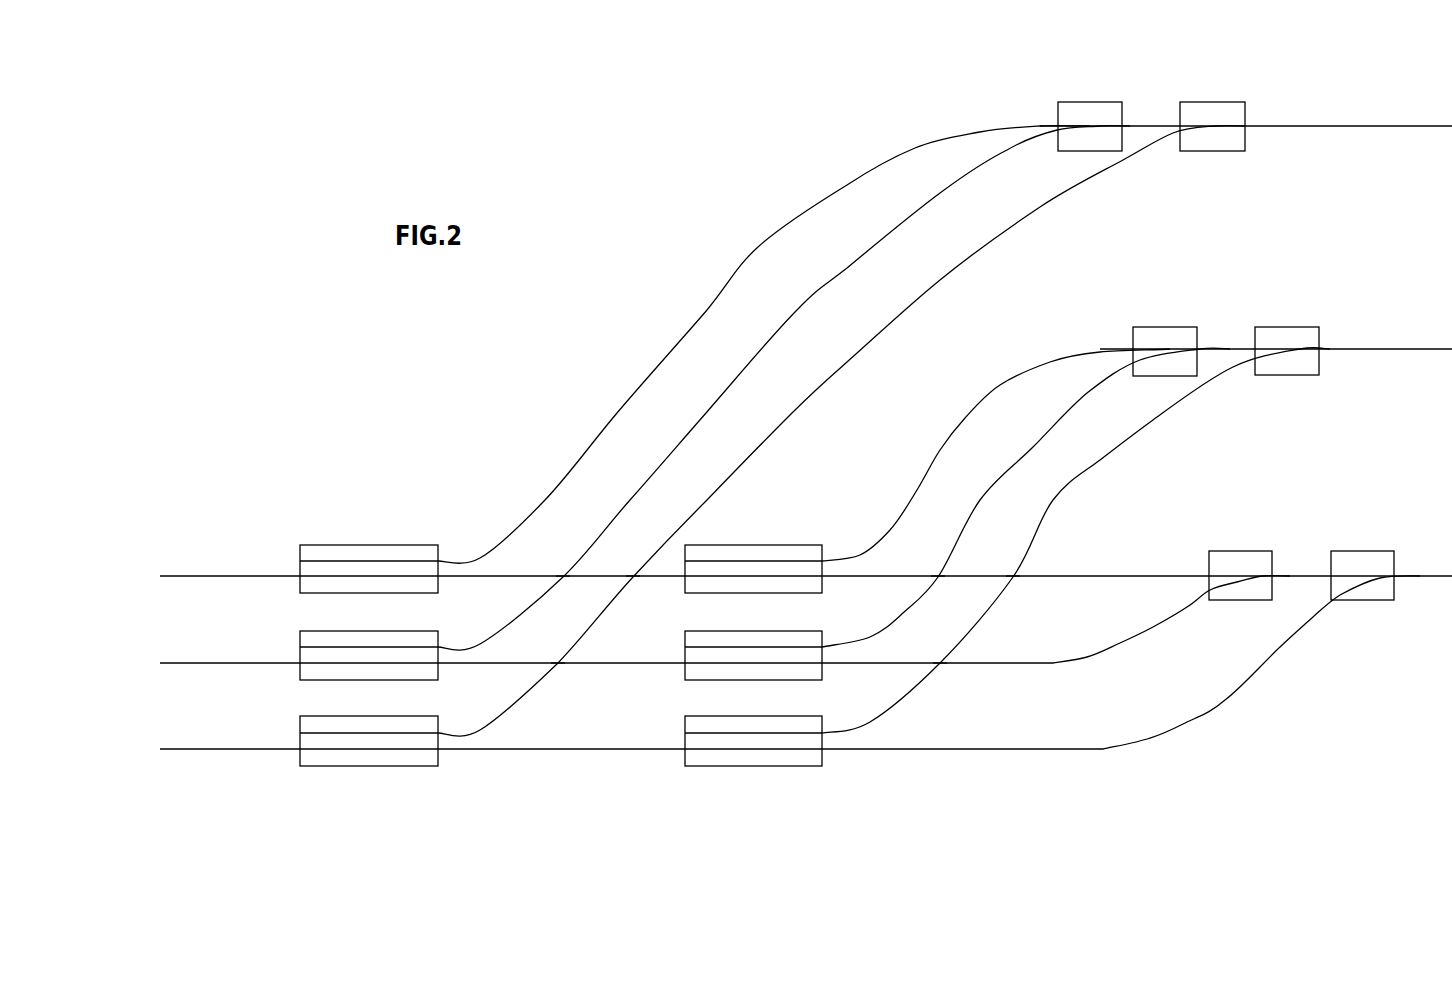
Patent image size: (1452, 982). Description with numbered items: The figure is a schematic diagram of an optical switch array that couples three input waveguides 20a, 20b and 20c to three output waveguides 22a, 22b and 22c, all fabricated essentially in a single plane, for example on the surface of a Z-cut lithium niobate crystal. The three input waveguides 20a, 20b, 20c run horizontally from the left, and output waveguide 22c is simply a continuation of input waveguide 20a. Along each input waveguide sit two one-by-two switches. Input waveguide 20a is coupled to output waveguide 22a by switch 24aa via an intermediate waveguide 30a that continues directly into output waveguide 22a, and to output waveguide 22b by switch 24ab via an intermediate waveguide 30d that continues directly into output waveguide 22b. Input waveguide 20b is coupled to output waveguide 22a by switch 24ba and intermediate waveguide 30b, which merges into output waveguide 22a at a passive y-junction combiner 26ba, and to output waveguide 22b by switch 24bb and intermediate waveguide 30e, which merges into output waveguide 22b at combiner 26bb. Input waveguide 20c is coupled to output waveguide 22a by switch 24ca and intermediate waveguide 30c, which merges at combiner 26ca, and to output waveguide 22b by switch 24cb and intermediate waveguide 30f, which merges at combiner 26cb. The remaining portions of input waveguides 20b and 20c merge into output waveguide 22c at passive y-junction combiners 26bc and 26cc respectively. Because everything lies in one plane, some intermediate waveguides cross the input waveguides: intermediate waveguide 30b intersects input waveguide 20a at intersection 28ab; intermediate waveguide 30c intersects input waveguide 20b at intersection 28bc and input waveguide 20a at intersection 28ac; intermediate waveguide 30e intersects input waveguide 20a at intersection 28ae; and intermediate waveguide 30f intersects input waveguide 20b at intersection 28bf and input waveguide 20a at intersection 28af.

The input waveguide 20a is at (197, 576).
The input waveguide 20b is at (197, 663).
The input waveguide 20c is at (197, 749).
The output waveguide 22a is at (920, 150).
The output waveguide 22b is at (1025, 368).
The output waveguide 22c is at (1122, 575).
The 1×2 switch 24aa is at (313, 545).
The 1×2 switch 24ba is at (313, 631).
The 1×2 switch 24ca is at (313, 716).
The 1×2 switch 24ab is at (745, 545).
The 1×2 switch 24bb is at (695, 678).
The 1×2 switch 24cb is at (725, 766).
The passive y-junction combiner 26ba is at (1088, 102).
The passive y-junction combiner 26ca is at (1208, 102).
The passive y-junction combiner 26bb is at (1163, 327).
The passive y-junction combiner 26cb is at (1286, 326).
The passive y-junction combiner 26bc is at (1242, 551).
The passive y-junction combiner 26cc is at (1365, 551).
The intersection 28ab is at (548, 572).
The intersection 28ac is at (632, 572).
The intersection 28bc is at (558, 660).
The intersection 28ae is at (933, 573).
The intersection 28af is at (1008, 573).
The intersection 28bf is at (940, 660).
The intermediate waveguide 30a is at (705, 310).
The intermediate waveguide 30b is at (797, 310).
The intermediate waveguide 30c is at (900, 312).
The intermediate waveguide 30d is at (938, 453).
The intermediate waveguide 30e is at (1028, 447).
The intermediate waveguide 30f is at (1120, 450).